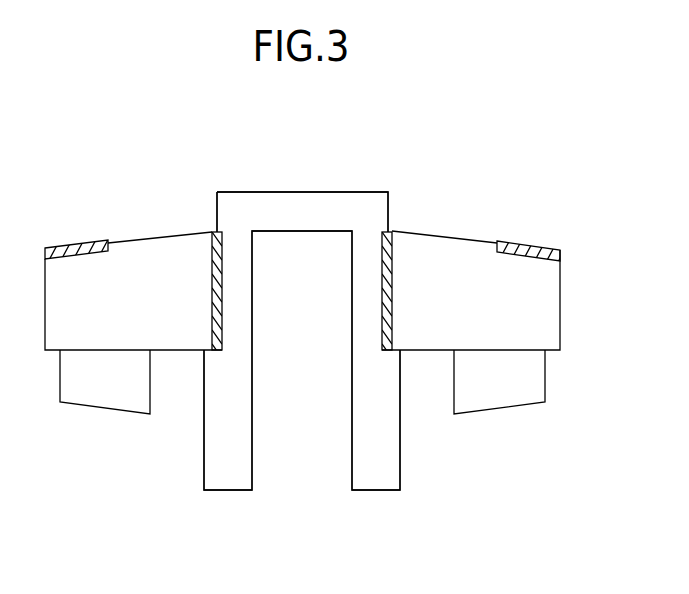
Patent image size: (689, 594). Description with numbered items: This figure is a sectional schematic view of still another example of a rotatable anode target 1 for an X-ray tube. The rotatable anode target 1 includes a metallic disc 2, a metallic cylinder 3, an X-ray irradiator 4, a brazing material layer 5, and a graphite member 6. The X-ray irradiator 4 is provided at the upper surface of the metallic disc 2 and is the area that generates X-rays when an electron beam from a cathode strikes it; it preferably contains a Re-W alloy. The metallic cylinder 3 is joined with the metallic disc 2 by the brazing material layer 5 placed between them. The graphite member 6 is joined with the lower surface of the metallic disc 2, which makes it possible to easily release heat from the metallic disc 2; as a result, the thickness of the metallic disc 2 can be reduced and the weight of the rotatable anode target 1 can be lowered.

The rotatable anode target 1 is at (66, 141).
The metallic disc 2 is at (560, 296).
The metallic cylinder 3 is at (302, 206).
The X-ray irradiator 4 is at (530, 250).
The brazing material layer 5 is at (390, 232).
The graphite member 6 is at (498, 407).